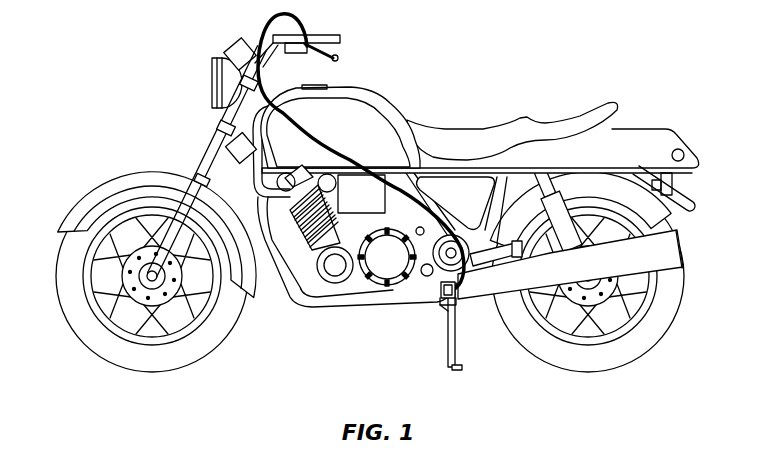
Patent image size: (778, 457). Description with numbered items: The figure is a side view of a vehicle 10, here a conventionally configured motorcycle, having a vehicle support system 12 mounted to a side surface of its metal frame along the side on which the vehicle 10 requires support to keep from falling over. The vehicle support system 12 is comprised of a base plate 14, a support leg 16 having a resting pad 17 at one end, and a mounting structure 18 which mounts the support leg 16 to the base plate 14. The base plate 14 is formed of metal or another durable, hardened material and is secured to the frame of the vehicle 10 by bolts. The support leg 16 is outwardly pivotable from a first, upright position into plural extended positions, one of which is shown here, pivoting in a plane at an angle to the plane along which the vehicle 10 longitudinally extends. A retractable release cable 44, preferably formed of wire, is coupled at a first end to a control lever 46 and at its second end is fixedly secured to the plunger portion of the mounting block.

The vehicle 10 is at (533, 82).
The vehicle support system 12 is at (442, 313).
The base plate 14 is at (441, 305).
The support leg 16 is at (455, 340).
The resting pad 17 is at (460, 370).
The mounting structure 18 is at (441, 300).
The retractable release cable 44 is at (337, 147).
The control lever 46 is at (327, 63).